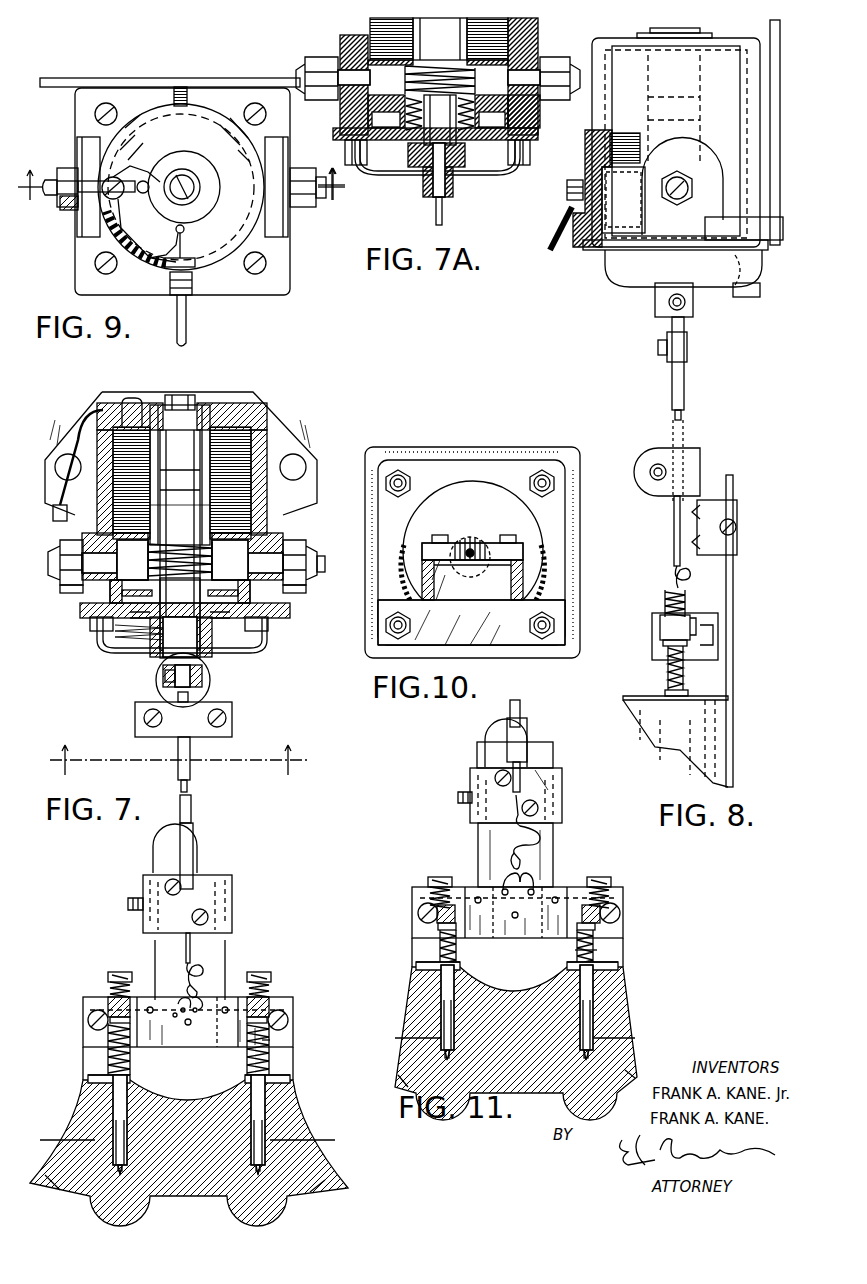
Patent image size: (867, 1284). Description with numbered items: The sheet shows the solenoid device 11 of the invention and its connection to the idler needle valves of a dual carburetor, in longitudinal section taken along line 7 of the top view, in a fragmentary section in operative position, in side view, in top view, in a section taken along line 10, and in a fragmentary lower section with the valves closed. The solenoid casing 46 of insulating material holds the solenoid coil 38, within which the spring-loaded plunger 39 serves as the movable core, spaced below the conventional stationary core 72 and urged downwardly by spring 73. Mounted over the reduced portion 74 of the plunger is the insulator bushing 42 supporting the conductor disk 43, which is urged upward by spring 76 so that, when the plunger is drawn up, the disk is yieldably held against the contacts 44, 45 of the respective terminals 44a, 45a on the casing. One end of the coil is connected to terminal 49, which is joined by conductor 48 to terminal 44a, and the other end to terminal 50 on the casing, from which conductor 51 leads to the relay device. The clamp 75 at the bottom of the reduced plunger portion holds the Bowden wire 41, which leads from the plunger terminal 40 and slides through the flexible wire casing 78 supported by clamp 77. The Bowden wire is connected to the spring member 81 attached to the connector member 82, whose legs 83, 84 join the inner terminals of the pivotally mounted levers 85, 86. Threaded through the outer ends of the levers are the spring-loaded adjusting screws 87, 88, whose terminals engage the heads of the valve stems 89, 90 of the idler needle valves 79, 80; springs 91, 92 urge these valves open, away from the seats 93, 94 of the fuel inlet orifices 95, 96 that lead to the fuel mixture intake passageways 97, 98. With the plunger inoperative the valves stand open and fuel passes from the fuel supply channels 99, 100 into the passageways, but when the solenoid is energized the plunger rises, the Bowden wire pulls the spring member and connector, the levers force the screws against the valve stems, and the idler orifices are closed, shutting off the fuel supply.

In FIG. 9, the section line 7— 7 is at (183, 192).
In FIG. 7A, the section line 7— 7 is at (332, 191).
In FIG. 7, the section line 10— 10 is at (180, 769).
In FIG. 8, the solenoid device 11 is at (620, 285).
In FIG. 7, the solenoid device 11 is at (275, 406).
In FIG. 9, the solenoid coil 38 is at (218, 233).
In FIG. 7A, the solenoid coil 38 is at (372, 18).
In FIG. 8, the solenoid coil 38 is at (606, 155).
In FIG. 7, the solenoid coil 38 is at (262, 435).
In FIG. 7A, the plunger 39 is at (455, 18).
In FIG. 8, the plunger 39 is at (688, 129).
In FIG. 7, the plunger 39 is at (188, 507).
In FIG. 7, the terminal 40 is at (202, 680).
In FIG. 7A, the Bowden wire 41 is at (443, 208).
In FIG. 8, the Bowden wire 41 is at (672, 527).
In FIG. 10, the Bowden wire 41 is at (467, 550).
In FIG. 7, the Bowden wire 41 is at (191, 798).
In FIG. 11, the Bowden wire 41 is at (522, 800).
In FIG. 7A, the insulator bushing 42 is at (410, 104).
In FIG. 7, the insulator bushing 42 is at (252, 594).
In FIG. 7A, the conductor disk 43 is at (540, 112).
In FIG. 8, the conductor disk 43 is at (625, 225).
In FIG. 7, the conductor disk 43 is at (290, 615).
In FIG. 7A, the contact 44 is at (345, 52).
In FIG. 7, the contact 44 is at (82, 601).
In FIG. 9, the terminal 44a is at (57, 178).
In FIG. 7, the terminal 44a is at (58, 590).
In FIG. 7A, the contact 45 is at (545, 58).
In FIG. 7, the contact 45 is at (295, 552).
In FIG. 7, the terminal 45a is at (320, 574).
In FIG. 9, the solenoid casing 46 is at (143, 108).
In FIG. 7A, the solenoid casing 46 is at (528, 38).
In FIG. 8, the solenoid casing 46 is at (592, 141).
In FIG. 10, the solenoid casing 46 is at (547, 447).
In FIG. 7, the solenoid casing 46 is at (238, 403).
In FIG. 9, the conductor 48 is at (68, 208).
In FIG. 7, the conductor 48 is at (96, 406).
In FIG. 9, the terminal 49 is at (118, 181).
In FIG. 7, the terminal 49 is at (125, 405).
In FIG. 9, the terminal 50 is at (190, 294).
In FIG. 8, the terminal 50 is at (567, 188).
In FIG. 9, the conductor 51 is at (187, 334).
In FIG. 8, the conductor 51 is at (553, 252).
In FIG. 9, the stationary core 72 is at (186, 196).
In FIG. 8, the stationary core 72 is at (660, 86).
In FIG. 7, the stationary core 72 is at (182, 406).
In FIG. 7A, the spring 73 is at (450, 58).
In FIG. 7, the spring 73 is at (178, 556).
In FIG. 7A, the reduced portion 74 is at (446, 106).
In FIG. 7, the reduced portion 74 is at (200, 640).
In FIG. 7A, the clamp 75 is at (430, 187).
In FIG. 8, the clamp 75 is at (668, 302).
In FIG. 7, the clamp 75 is at (165, 678).
In FIG. 7A, the spring 76 is at (466, 136).
In FIG. 8, the spring 76 is at (695, 105).
In FIG. 7, the spring 76 is at (180, 478).
In FIG. 8, the clamp 77 is at (658, 347).
In FIG. 10, the clamp 77 is at (426, 545).
In FIG. 7, the clamp 77 is at (232, 724).
In FIG. 8, the flexible wire casing 78 is at (684, 382).
In FIG. 10, the flexible wire casing 78 is at (474, 548).
In FIG. 7, the flexible wire casing 78 is at (190, 766).
In FIG. 11, the flexible wire casing 78 is at (521, 712).
In FIG. 8, the idler needle valve 79 is at (668, 676).
In FIG. 7, the idler needle valve 79 is at (265, 1046).
In FIG. 11, the idler needle valve 79 is at (596, 955).
In FIG. 7, the idler needle valve 80 is at (115, 1068).
In FIG. 11, the idler needle valve 80 is at (456, 960).
In FIG. 8, the spring member 81 is at (690, 577).
In FIG. 7, the spring member 81 is at (202, 966).
In FIG. 11, the spring member 81 is at (541, 840).
In FIG. 7, the connector member 82 is at (200, 988).
In FIG. 11, the connector member 82 is at (512, 862).
In FIG. 7, the leg 83 is at (180, 1004).
In FIG. 11, the leg 83 is at (506, 890).
In FIG. 7, the leg 84 is at (200, 1002).
In FIG. 11, the leg 84 is at (530, 890).
In FIG. 8, the lever 85 is at (688, 616).
In FIG. 7, the lever 85 is at (280, 1008).
In FIG. 11, the lever 85 is at (615, 912).
In FIG. 7, the lever 86 is at (92, 1010).
In FIG. 11, the lever 86 is at (420, 910).
In FIG. 8, the adjusting screw 87 is at (666, 594).
In FIG. 7, the adjusting screw 87 is at (260, 972).
In FIG. 11, the adjusting screw 87 is at (597, 877).
In FIG. 7, the adjusting screw 88 is at (118, 972).
In FIG. 11, the adjusting screw 88 is at (443, 877).
In FIG. 8, the valve stem 89 is at (660, 642).
In FIG. 7, the valve stem 89 is at (268, 1020).
In FIG. 11, the valve stem 89 is at (596, 928).
In FIG. 7, the valve stem 90 is at (108, 1020).
In FIG. 11, the valve stem 90 is at (438, 928).
In FIG. 8, the spring 91 is at (684, 670).
In FIG. 7, the spring 91 is at (268, 1060).
In FIG. 11, the spring 91 is at (592, 968).
In FIG. 7, the spring 92 is at (110, 1058).
In FIG. 11, the spring 92 is at (440, 963).
In FIG. 7, the seat 93 is at (255, 1170).
In FIG. 11, the seat 93 is at (585, 1060).
In FIG. 7, the seat 94 is at (117, 1170).
In FIG. 11, the seat 94 is at (450, 1060).
In FIG. 7, the fuel inlet orifice 95 is at (262, 1172).
In FIG. 11, the fuel inlet orifice 95 is at (590, 1062).
In FIG. 7, the fuel inlet orifice 96 is at (124, 1172).
In FIG. 11, the fuel inlet orifice 96 is at (445, 1062).
In FIG. 7, the fuel mixture intake passageway 97 is at (290, 1190).
In FIG. 11, the fuel mixture intake passageway 97 is at (632, 1062).
In FIG. 7, the fuel mixture intake passageway 98 is at (82, 1190).
In FIG. 11, the fuel mixture intake passageway 98 is at (415, 1083).
In FIG. 7, the fuel supply channel 99 is at (290, 1130).
In FIG. 11, the fuel supply channel 99 is at (610, 1035).
In FIG. 7, the fuel supply channel 100 is at (85, 1136).
In FIG. 11, the fuel supply channel 100 is at (425, 1035).